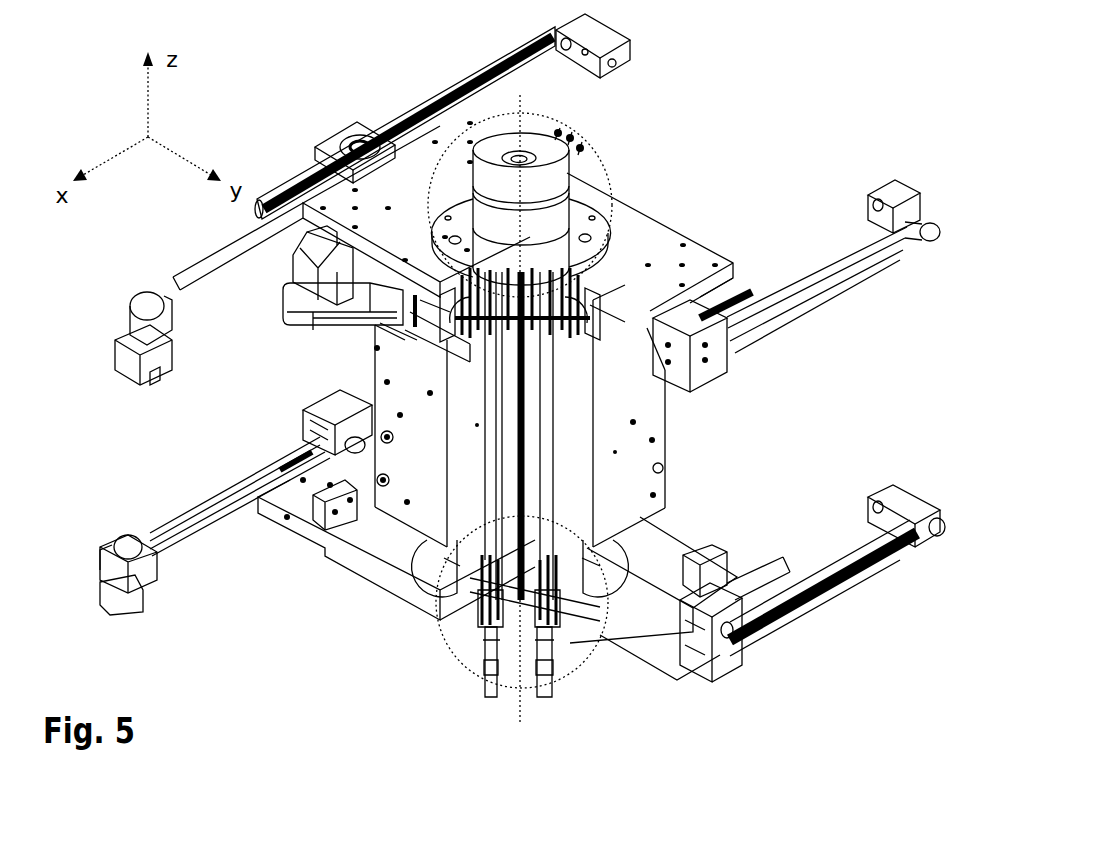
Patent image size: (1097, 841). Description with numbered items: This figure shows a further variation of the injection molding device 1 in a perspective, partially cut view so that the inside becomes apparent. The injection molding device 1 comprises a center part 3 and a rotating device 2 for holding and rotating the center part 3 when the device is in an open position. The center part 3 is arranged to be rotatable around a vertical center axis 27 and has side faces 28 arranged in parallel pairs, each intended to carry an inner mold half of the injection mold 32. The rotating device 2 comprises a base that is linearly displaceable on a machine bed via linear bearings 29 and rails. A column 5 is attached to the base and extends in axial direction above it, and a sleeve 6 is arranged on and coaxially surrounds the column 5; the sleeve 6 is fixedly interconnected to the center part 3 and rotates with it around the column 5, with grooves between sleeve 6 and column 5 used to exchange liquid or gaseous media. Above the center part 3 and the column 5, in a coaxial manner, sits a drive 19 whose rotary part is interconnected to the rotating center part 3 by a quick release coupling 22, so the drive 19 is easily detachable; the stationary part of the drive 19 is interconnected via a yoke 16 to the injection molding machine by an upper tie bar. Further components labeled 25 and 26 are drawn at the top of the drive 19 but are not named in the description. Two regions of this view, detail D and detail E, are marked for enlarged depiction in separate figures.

The injection molding device 1 is at (262, 64).
The rotating device 2 is at (334, 609).
The center part 3 is at (352, 385).
The column 5 is at (532, 450).
The sleeve 6 is at (563, 428).
The yoke 16 is at (463, 115).
The drive 19 is at (583, 112).
The quick release coupling 22 is at (470, 313).
The motor 25 is at (593, 155).
The flange 26 is at (598, 210).
The center axis 27 is at (527, 483).
The side faces 28 is at (637, 481).
The linear bearings 29 is at (770, 645).
The injection mold 32 is at (212, 222).
The detail D is at (590, 667).
The detail E is at (600, 246).